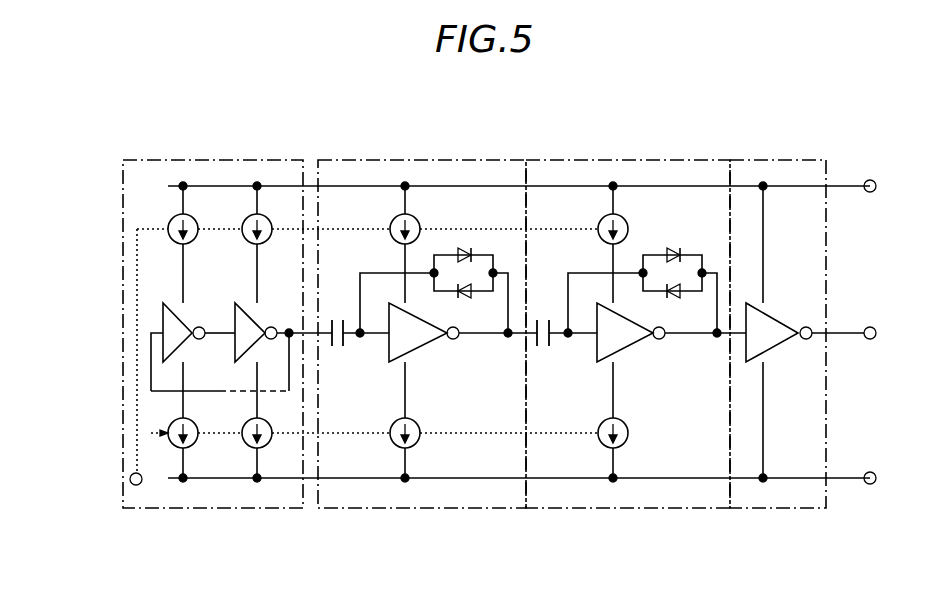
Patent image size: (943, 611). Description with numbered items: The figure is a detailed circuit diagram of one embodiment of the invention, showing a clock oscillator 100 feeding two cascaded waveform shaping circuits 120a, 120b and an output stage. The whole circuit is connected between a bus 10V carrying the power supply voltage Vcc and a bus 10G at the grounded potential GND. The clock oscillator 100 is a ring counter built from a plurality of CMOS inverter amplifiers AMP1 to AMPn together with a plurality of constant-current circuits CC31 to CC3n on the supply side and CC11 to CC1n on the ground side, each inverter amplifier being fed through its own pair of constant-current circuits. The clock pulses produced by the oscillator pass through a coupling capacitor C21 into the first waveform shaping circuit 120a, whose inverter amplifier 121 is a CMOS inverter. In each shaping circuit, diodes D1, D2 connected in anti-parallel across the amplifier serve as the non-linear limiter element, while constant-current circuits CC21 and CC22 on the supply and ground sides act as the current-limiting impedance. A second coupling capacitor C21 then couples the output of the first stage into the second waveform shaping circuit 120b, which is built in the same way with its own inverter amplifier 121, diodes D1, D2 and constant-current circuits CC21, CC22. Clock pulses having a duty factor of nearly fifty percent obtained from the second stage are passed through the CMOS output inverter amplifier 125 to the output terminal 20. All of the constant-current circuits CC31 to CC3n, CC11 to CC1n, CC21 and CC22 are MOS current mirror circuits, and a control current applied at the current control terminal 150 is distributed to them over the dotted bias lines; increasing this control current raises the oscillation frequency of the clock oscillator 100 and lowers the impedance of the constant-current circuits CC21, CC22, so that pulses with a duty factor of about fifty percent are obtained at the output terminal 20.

The clock oscillator 100 is at (226, 162).
The waveform shaping circuit 120a is at (426, 165).
The waveform shaping circuit 120b is at (648, 163).
The bus of power supply voltage 10V is at (508, 166).
The bus of grounded potential 10G is at (483, 478).
The power supply voltage Vcc is at (867, 176).
The ground GND is at (862, 491).
The current control terminal 150 is at (143, 484).
The constant-current circuit CC31 is at (168, 222).
The constant-current circuit CC3n is at (231, 217).
The constant-current circuit CC11 is at (195, 437).
The constant-current circuit CC1n is at (242, 423).
The inverter amplifier AMP1 is at (162, 310).
The inverter amplifier AMPn is at (236, 312).
The coupling capacitor C21 is at (344, 346).
The constant-current circuit CC21 is at (390, 228).
The constant-current circuit CC22 is at (391, 419).
The inverter amplifier 121 is at (427, 346).
The diode D1 is at (463, 250).
The diode D2 is at (473, 296).
The output inverter amplifier 125 is at (774, 315).
The output terminal 20 is at (862, 328).